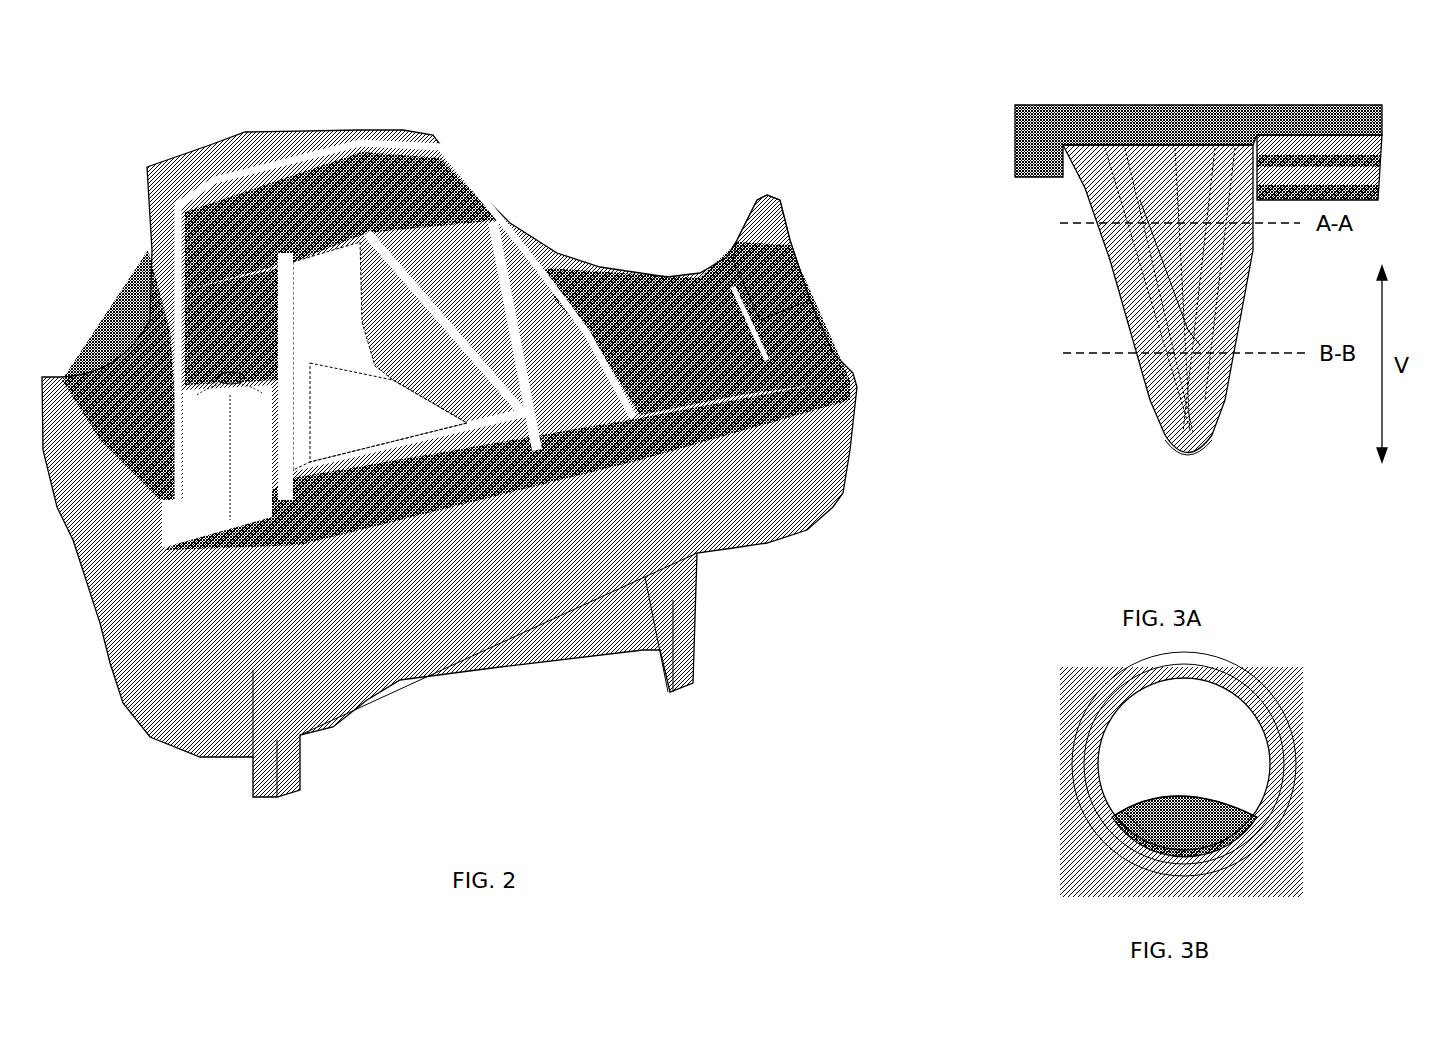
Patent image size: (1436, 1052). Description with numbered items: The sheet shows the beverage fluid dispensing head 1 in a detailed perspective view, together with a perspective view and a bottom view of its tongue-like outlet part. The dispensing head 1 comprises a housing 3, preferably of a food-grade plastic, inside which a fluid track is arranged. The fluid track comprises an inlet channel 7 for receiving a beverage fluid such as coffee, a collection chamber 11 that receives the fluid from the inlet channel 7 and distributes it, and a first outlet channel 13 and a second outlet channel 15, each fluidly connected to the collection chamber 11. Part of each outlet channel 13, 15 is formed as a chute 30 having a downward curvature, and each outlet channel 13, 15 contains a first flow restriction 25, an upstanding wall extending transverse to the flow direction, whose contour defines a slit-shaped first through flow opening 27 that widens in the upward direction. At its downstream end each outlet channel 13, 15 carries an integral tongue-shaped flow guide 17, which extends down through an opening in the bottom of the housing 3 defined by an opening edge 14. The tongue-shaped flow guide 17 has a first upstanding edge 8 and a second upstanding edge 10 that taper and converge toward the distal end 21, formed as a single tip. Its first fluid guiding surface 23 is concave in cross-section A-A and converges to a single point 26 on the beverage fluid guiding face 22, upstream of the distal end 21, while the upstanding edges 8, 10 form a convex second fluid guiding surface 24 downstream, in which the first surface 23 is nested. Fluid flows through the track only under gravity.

In FIG. 2, the beverage fluid dispensing head 1 is at (821, 211).
In FIG. 2, the housing 3 is at (765, 197).
In FIG. 3A, the housing 3 is at (1027, 150).
In FIG. 3B, the housing 3 is at (1265, 830).
In FIG. 2, the inlet channel 7 is at (366, 426).
In FIG. 3A, the first upstanding edge 8 is at (1063, 148).
In FIG. 3A, the second upstanding edge 10 is at (1265, 155).
In FIG. 2, the collection chamber 11 is at (345, 296).
In FIG. 2, the first outlet channel 13 is at (214, 500).
In FIG. 3A, the opening edge 14 is at (1315, 158).
In FIG. 2, the second outlet channel 15 is at (572, 426).
In FIG. 3A, the tongue-shaped flow guide 17 is at (1194, 190).
In FIG. 3B, the tongue-shaped flow guide 17 is at (1194, 845).
In FIG. 3A, the distal end 21 is at (1192, 458).
In FIG. 3B, the distal end 21 is at (1182, 792).
In FIG. 3A, the beverage fluid guiding face 22 is at (1118, 381).
In FIG. 3B, the beverage fluid guiding face 22 is at (1150, 784).
In FIG. 3A, the first fluid guiding surface 23 is at (1178, 290).
In FIG. 3A, the second fluid guiding surface 24 is at (1183, 383).
In FIG. 3B, the second fluid guiding surface 24 is at (1140, 798).
In FIG. 2, the first flow restriction 25 is at (193, 310).
In FIG. 3A, the single point 26 is at (1187, 320).
In FIG. 2, the first through flow opening 27 is at (230, 352).
In FIG. 2, the chute 30 is at (230, 410).